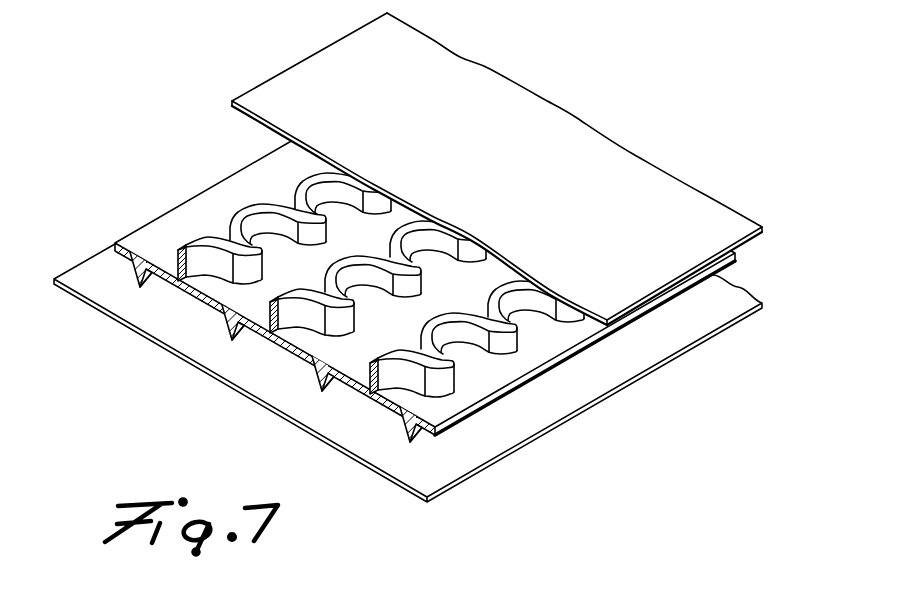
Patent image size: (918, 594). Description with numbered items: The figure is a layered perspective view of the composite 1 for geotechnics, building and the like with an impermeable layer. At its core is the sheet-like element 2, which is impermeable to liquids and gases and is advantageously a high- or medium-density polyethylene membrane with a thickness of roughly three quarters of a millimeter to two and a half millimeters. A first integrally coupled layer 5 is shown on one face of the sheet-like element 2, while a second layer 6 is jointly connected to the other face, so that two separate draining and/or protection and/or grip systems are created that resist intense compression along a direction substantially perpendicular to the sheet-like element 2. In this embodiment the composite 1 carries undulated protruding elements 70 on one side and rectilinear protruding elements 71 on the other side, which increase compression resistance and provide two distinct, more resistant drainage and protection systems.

The composite 1 is at (127, 67).
The sheet-like element 2 is at (150, 233).
The first integrally coupled layer 5 is at (298, 72).
The second layer 6 is at (97, 273).
The undulated protruding elements 70 is at (247, 208).
The rectilinear protruding elements 71 is at (130, 288).